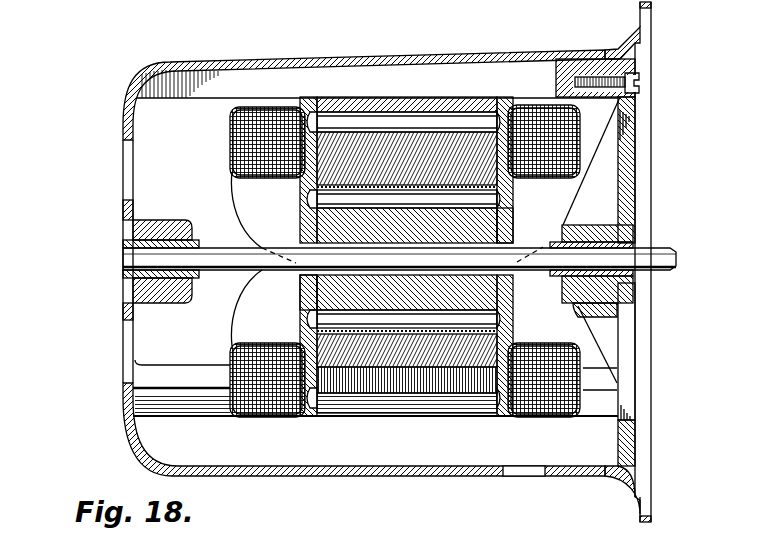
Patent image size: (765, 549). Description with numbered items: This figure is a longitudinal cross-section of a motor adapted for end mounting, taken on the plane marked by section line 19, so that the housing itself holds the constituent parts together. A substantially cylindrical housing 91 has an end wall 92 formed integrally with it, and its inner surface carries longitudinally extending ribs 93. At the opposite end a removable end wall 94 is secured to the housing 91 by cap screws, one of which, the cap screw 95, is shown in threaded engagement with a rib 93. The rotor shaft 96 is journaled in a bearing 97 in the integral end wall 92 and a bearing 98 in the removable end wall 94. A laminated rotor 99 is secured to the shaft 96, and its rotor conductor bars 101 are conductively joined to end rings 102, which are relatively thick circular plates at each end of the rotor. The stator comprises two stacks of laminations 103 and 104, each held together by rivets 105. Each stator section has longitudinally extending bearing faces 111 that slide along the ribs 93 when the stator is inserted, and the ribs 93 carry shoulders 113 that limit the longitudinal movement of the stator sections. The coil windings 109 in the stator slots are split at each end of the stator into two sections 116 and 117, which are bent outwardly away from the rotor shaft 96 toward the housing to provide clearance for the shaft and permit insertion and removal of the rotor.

The section line 19— 19 is at (485, 33).
The housing 91 is at (290, 61).
The end wall 92 is at (120, 127).
The rib 93 is at (185, 367).
The removable end wall 94 is at (636, 152).
The cap screw 95 is at (642, 95).
The rotor shaft 96 is at (130, 259).
The bearing 97 is at (176, 232).
The bearing 98 is at (594, 237).
The laminated rotor 99 is at (303, 222).
The rotor conductor bars 101 is at (407, 260).
The end rings 102 is at (512, 226).
The stack of laminations 103 is at (362, 99).
The stack of laminations 104 is at (354, 362).
The rivets 105 is at (460, 117).
The coil windings 109 is at (230, 213).
The bearing faces 111 is at (457, 396).
The shoulders 113 is at (313, 99).
The coil section 116 is at (290, 414).
The coil section 117 is at (238, 135).